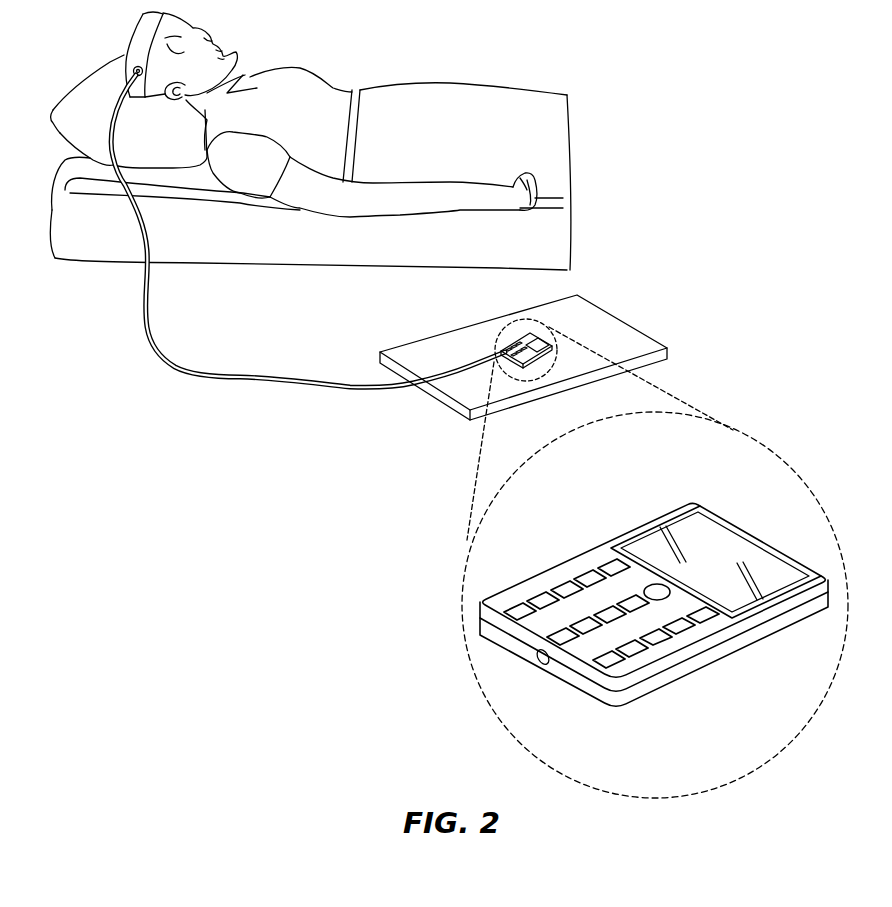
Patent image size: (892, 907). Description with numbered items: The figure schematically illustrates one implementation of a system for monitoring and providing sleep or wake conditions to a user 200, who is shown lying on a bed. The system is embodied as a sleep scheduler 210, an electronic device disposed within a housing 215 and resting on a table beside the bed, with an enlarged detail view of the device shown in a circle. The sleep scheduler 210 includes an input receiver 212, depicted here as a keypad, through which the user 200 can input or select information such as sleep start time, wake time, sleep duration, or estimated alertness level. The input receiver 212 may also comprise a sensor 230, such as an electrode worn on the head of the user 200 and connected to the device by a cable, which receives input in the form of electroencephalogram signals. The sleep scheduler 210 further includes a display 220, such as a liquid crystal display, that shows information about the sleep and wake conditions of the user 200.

The user 200 is at (473, 63).
The sleep scheduler 210 is at (605, 526).
The input receiver 212 is at (513, 337).
The housing 215 is at (710, 657).
The display 220 is at (700, 530).
The sensor 230 is at (137, 67).